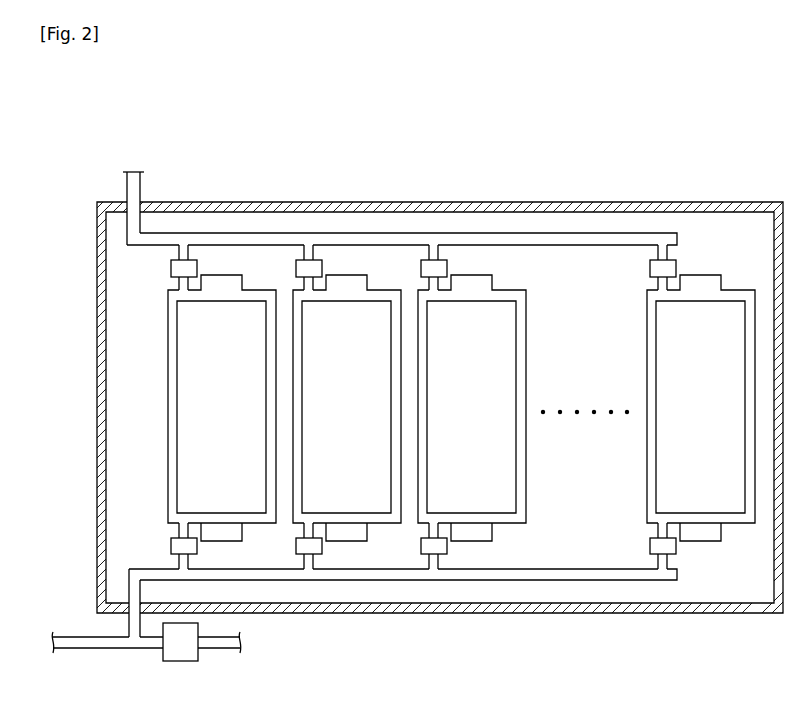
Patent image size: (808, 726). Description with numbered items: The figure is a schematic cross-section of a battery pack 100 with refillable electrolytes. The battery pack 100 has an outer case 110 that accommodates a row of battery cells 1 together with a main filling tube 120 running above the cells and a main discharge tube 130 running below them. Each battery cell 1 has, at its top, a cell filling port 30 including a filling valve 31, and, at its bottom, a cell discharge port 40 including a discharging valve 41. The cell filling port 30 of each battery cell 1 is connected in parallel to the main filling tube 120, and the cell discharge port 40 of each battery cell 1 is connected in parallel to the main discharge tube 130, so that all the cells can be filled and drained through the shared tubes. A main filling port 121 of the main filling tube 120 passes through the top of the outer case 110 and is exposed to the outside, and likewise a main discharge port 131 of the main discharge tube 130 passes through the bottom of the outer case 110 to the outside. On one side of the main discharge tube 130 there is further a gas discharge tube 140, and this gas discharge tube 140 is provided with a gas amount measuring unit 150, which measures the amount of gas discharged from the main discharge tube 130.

The battery pack 100 is at (132, 84).
The outer case 110 is at (588, 207).
The main filling tube 120 is at (141, 193).
The main filling port 121 is at (137, 172).
The cell filling port 30 is at (178, 252).
The filling valve 31 is at (171, 268).
The battery cell 1 is at (168, 405).
The discharging valve 41 is at (172, 548).
The cell discharge port 40 is at (183, 563).
The main discharge tube 130 is at (370, 575).
The main discharge port 131 is at (83, 643).
The gas amount measuring unit 150 is at (178, 661).
The gas discharge tube 140 is at (227, 648).